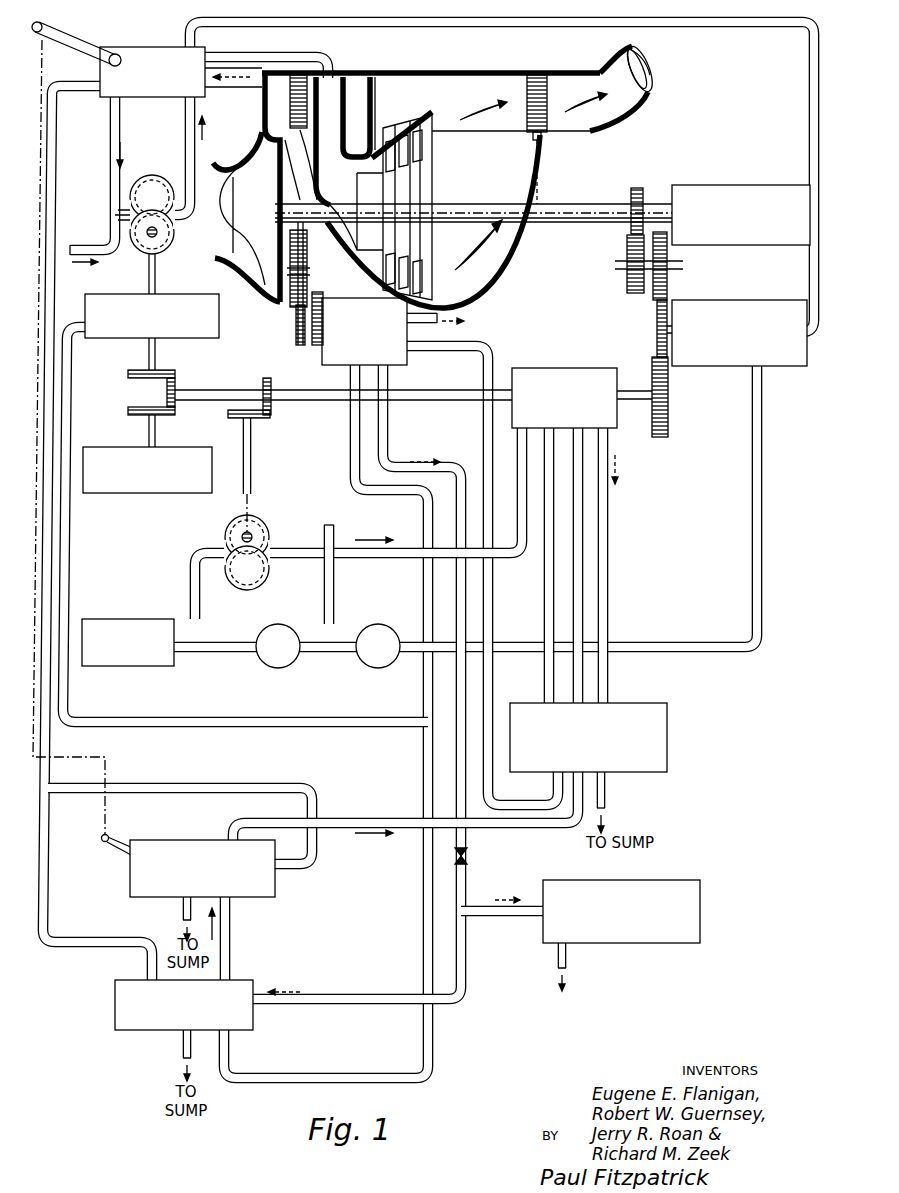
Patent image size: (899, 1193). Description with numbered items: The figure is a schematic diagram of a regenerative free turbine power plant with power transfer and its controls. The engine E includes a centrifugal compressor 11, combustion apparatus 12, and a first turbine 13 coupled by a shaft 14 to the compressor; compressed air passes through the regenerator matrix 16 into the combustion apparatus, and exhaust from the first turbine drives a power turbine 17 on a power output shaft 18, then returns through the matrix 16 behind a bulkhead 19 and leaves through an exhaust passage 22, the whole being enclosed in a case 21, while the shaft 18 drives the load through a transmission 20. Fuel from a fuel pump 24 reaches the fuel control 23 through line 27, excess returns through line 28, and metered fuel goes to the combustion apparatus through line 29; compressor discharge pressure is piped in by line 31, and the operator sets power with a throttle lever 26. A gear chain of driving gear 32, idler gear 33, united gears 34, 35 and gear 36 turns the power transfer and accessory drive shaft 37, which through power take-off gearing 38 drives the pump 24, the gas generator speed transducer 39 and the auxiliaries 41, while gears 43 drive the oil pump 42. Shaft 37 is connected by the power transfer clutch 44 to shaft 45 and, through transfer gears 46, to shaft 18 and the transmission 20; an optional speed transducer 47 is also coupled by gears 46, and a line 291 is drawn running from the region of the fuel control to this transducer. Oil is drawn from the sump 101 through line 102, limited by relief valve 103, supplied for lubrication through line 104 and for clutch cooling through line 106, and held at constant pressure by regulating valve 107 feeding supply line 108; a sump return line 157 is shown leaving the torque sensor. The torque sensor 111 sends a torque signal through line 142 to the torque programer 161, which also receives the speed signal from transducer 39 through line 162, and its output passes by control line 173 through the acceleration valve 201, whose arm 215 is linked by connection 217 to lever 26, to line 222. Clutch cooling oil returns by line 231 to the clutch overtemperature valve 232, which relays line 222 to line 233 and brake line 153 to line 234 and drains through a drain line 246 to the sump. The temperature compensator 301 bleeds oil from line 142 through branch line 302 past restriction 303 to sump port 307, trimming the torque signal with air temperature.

The centrifugal compressor 11 is at (240, 165).
The combustion apparatus 12 is at (350, 74).
The first turbine 13 is at (393, 135).
The shaft 14 is at (336, 190).
The matrix 16 is at (300, 74).
The power turbine 17 is at (425, 160).
The power output shaft 18 is at (596, 203).
The bulkhead 19 is at (378, 74).
The transmission 20 is at (745, 184).
The case or housing 21 is at (512, 288).
The exhaust passage 22 is at (615, 115).
The fuel control 23 is at (165, 46).
The fuel pump 24 is at (148, 176).
The throttle lever 26 is at (80, 42).
The fuel supply line 27 is at (190, 124).
The fuel return line 28 is at (110, 132).
The fuel delivery line 29 is at (266, 56).
The compressor discharge pressure line 31 is at (222, 84).
The driving gear 32 is at (308, 255).
The idler gear 33 is at (292, 312).
The gear 34 is at (294, 336).
The gear 35 is at (325, 295).
The gear 36 is at (300, 378).
The power transfer and accessory drive shaft 37 is at (288, 402).
The power take-off gearing 38 is at (180, 372).
The gas generator speed transducer 39 is at (200, 293).
The auxiliaries 41 is at (192, 446).
The oil pump 42 is at (240, 590).
The gears 43 is at (256, 420).
The power transfer clutch 44 is at (603, 366).
The shaft 45 is at (640, 400).
The transfer gears 46 is at (630, 228).
The speed transducer 47 is at (770, 299).
The sump 101 is at (95, 618).
The line 102 is at (188, 565).
The relief valve 103 is at (268, 665).
The line 104 is at (326, 525).
The line 106 is at (522, 560).
The constant pressure regulating valve 107 is at (375, 623).
The supply line 108 is at (68, 390).
The torque sensor 111 is at (400, 362).
The line 142 is at (395, 460).
The brake energizing oil line 153 is at (495, 350).
The sump return line 157 is at (440, 312).
The torque programer 161 is at (114, 994).
The line 162 is at (55, 283).
The power transfer clutch control line 173 is at (230, 940).
The acceleration valve 201 is at (183, 839).
The arm 215 is at (103, 845).
The connection 217 is at (44, 66).
The line 222 is at (338, 820).
The line 231 is at (608, 511).
The clutch overtemperature valve 232 is at (672, 758).
The line 233 is at (575, 626).
The line 234 is at (580, 572).
The drain line to sump 246 is at (606, 797).
The transducer signal line 291 is at (812, 70).
The temperature compensator 301 is at (672, 945).
The branch line 302 is at (505, 915).
The restriction 303 is at (470, 858).
The sump port 307 is at (557, 966).
The engine E is at (442, 166).